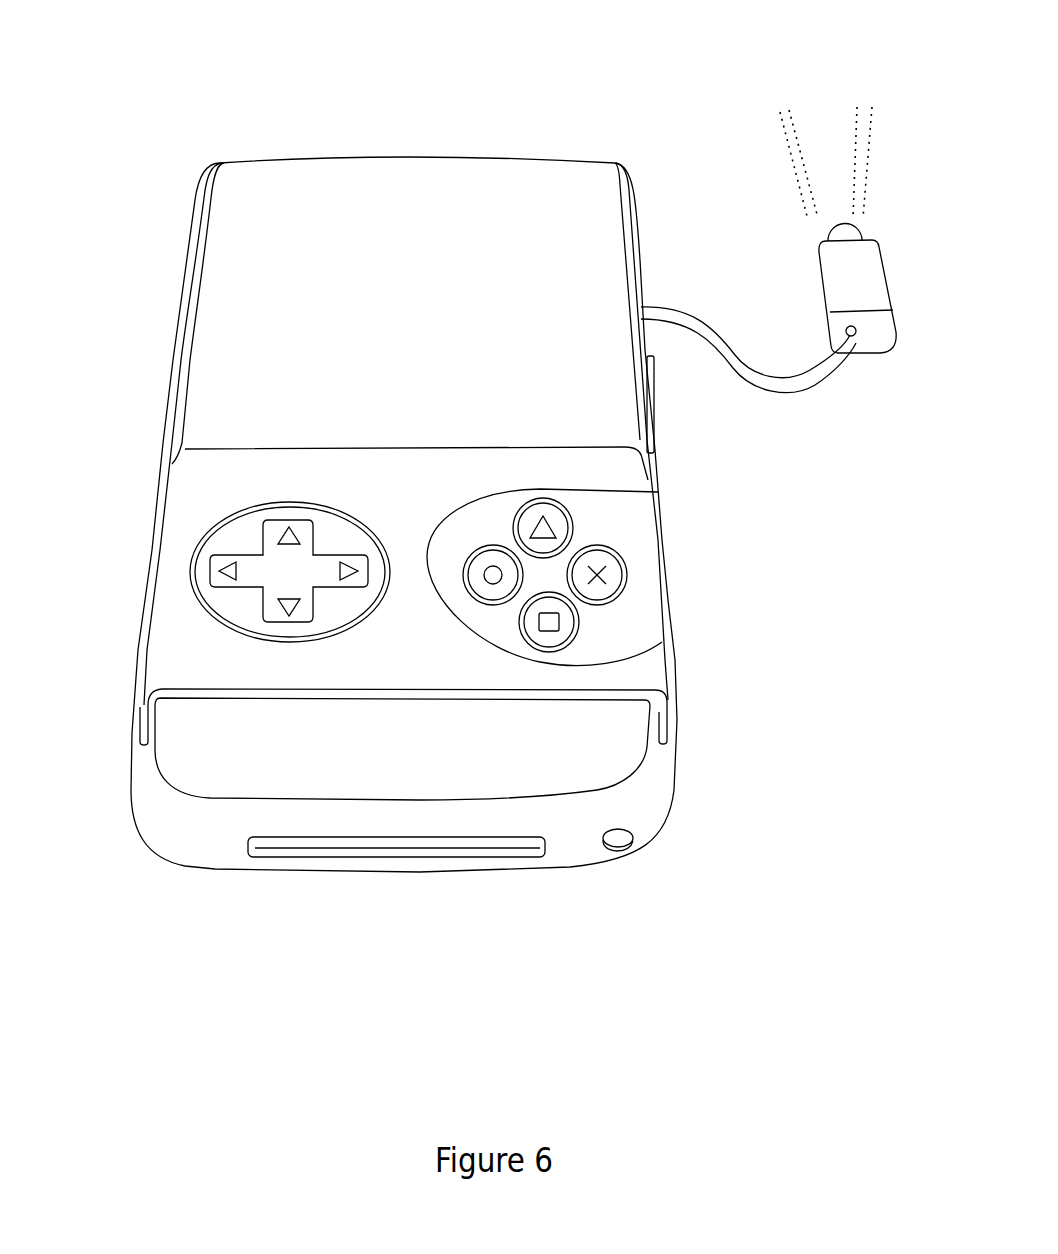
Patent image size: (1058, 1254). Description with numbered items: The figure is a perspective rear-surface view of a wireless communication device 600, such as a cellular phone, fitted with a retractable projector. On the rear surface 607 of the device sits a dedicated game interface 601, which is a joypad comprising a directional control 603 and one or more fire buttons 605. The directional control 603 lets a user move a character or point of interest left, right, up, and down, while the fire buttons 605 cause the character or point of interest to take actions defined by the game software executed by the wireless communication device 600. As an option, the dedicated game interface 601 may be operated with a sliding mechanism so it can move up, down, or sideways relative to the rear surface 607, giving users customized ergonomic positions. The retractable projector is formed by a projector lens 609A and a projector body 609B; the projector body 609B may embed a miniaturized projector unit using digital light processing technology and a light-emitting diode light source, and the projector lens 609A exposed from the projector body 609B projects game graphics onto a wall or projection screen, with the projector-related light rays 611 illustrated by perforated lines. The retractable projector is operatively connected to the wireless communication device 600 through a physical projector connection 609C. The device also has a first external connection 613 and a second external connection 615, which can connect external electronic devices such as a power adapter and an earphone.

The wireless communication device 600 is at (512, 1100).
The dedicated game interface 601 is at (230, 468).
The directional control 603 is at (233, 597).
The fire buttons 605 is at (573, 522).
The rear surface 607 is at (343, 223).
The projector lens 609A is at (808, 235).
The projector body 609B is at (808, 288).
The physical projector connection 609C is at (786, 400).
The projector-related light rays 611 is at (766, 127).
The first external connection 613 is at (331, 855).
The second external connection 615 is at (620, 846).